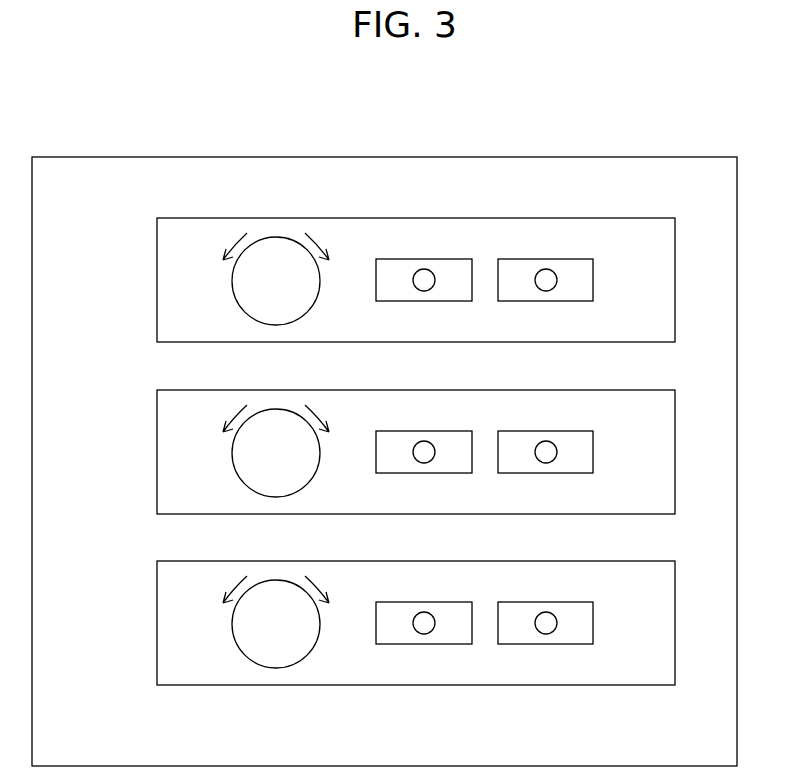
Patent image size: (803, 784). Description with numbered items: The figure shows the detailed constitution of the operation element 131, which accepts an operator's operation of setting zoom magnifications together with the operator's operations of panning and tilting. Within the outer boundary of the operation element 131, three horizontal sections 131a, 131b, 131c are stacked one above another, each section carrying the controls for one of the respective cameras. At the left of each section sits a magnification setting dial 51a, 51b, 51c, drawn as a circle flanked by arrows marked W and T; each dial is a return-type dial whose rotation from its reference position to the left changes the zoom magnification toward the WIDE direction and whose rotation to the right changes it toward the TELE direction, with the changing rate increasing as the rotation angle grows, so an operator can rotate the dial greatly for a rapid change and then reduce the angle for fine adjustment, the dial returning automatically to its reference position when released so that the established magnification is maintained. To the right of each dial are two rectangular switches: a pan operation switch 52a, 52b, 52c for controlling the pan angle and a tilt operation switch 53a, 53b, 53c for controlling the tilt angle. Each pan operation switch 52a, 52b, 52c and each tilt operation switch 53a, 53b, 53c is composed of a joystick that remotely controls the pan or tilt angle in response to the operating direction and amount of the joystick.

The operation element 131 is at (562, 157).
The operation element section 131a is at (500, 218).
The operation element section 131b is at (416, 436).
The operation element section 131c is at (416, 607).
The magnification setting dial 51a is at (312, 305).
The magnification setting dial 51b is at (304, 454).
The magnification setting dial 51c is at (303, 625).
The pan operation switch 52a is at (390, 259).
The pan operation switch 52b is at (425, 438).
The pan operation switch 52c is at (424, 609).
The tilt operation switch 53a is at (518, 259).
The tilt operation switch 53b is at (551, 438).
The tilt operation switch 53c is at (550, 609).